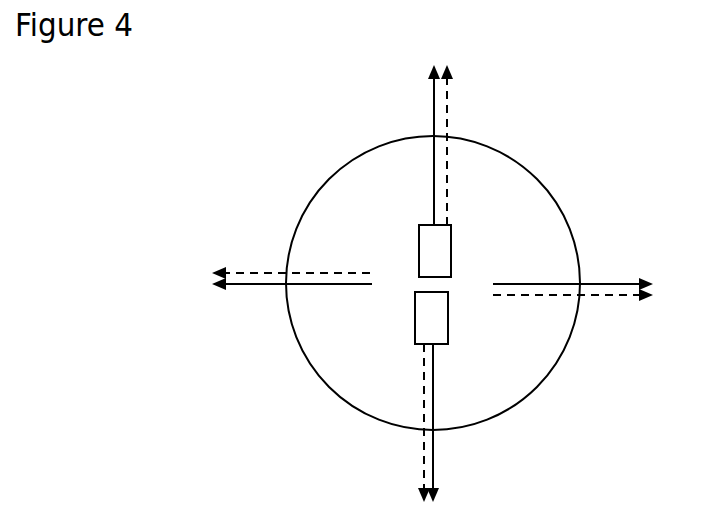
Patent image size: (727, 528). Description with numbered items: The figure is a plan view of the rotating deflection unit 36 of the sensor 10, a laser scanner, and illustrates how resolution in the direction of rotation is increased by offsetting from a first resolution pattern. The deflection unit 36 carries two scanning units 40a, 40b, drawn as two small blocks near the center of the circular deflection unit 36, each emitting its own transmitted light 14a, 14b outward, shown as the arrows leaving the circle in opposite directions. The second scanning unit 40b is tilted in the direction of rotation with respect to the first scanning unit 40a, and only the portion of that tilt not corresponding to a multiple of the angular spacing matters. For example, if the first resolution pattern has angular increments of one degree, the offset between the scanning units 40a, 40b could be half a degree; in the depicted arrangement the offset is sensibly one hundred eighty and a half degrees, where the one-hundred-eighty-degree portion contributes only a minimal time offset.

The sensor 10 is at (588, 130).
The transmitted light 14a is at (434, 122).
The transmitted light 14b is at (420, 453).
The deflection unit 36 is at (558, 357).
The first scanning unit 40a is at (430, 258).
The second scanning unit 40b is at (440, 315).